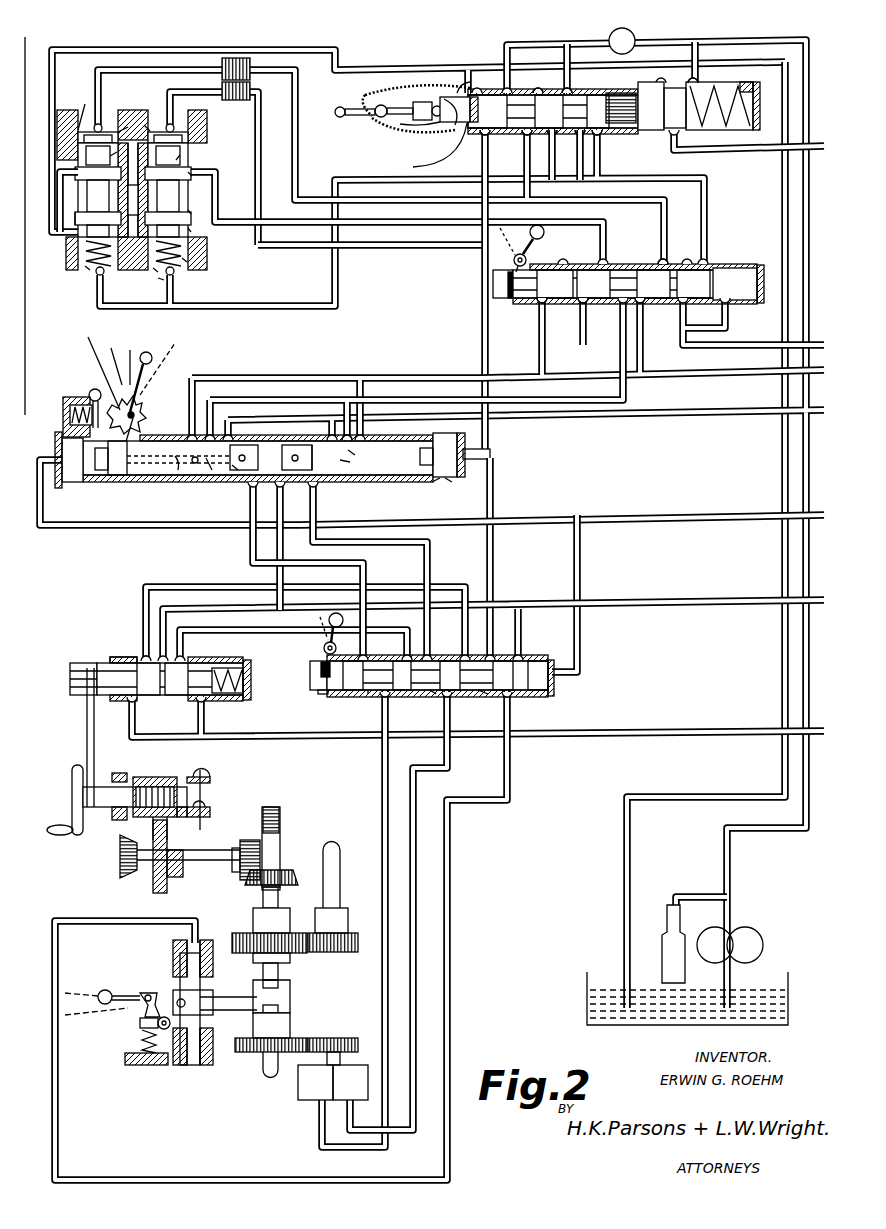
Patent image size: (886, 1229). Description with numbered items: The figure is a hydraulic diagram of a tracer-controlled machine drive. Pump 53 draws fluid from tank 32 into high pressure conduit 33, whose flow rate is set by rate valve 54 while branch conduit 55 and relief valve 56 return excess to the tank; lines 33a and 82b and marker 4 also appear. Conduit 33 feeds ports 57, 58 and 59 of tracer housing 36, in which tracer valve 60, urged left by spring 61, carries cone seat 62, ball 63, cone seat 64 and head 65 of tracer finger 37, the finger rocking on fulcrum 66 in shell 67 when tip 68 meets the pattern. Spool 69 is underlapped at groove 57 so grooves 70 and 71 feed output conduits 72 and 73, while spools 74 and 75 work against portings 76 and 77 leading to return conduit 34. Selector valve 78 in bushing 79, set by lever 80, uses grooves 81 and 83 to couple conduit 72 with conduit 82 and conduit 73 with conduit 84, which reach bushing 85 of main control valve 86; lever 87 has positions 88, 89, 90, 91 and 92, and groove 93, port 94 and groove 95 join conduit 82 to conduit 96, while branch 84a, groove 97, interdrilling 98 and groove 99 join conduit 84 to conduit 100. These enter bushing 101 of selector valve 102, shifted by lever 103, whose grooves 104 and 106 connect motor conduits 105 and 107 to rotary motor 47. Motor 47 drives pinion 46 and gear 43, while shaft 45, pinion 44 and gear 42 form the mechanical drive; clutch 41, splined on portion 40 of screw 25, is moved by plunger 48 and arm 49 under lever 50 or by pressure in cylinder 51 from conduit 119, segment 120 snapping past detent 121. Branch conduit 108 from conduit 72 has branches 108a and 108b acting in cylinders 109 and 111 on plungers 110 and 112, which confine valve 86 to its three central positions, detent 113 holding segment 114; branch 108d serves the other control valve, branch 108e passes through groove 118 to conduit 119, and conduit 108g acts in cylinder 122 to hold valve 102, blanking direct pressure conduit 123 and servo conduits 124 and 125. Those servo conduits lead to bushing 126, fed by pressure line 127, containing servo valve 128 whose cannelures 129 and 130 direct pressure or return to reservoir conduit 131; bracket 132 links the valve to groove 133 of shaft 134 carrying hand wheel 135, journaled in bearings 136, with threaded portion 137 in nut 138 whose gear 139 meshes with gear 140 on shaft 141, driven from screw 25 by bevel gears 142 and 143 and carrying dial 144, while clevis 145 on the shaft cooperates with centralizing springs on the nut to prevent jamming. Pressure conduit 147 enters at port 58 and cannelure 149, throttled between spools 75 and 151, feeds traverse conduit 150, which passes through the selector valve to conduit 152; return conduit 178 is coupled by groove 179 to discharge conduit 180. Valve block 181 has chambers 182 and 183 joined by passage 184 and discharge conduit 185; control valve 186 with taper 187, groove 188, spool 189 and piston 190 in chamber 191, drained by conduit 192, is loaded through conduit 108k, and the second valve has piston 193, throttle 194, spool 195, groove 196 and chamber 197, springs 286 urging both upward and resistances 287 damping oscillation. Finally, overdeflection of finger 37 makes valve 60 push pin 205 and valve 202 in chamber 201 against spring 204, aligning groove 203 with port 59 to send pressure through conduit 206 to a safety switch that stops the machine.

The section line 4 is at (207, 766).
The screw 25 is at (280, 815).
The tank or sump of hydraulic unit 32 is at (597, 1027).
The high pressure conduit 33 is at (783, 227).
The pressure line branch 33a is at (280, 578).
The reservoir return conduit 34 is at (780, 203).
The tracer housing section 36 is at (690, 65).
The tracer finger 37 is at (375, 105).
The extending portion of screw 40 is at (270, 1078).
The double face clutch 41 is at (290, 990).
The gear 42 is at (245, 935).
The gear 43 is at (242, 1055).
The pinion 44 is at (360, 950).
The shaft 45 is at (348, 836).
The pinion 46 is at (358, 1030).
The high pressure rotary pump 47 is at (296, 1100).
The clutch shifting plunger 48 is at (195, 1068).
The shifter arm 49 is at (224, 1012).
The shift lever 50 is at (108, 990).
The hydraulic cylinder 51 is at (172, 954).
The pump 53 is at (740, 928).
The adjustable rate valve 54 is at (608, 33).
The branch conduit 55 is at (688, 897).
The adjustable relief valve 56 is at (665, 925).
The inlet port 57 is at (494, 93).
The inlet port 58 is at (572, 92).
The inlet port 59 is at (700, 84).
The tracer valve member 60 is at (460, 128).
The spring 61 is at (618, 92).
The cone seat 62 is at (452, 124).
The ball 63 is at (436, 117).
The cone seat 64 is at (418, 121).
The head 65 is at (402, 128).
The ball or fulcrum 66 is at (380, 95).
The tracer shell 67 is at (368, 126).
The tracer tip 68 is at (333, 113).
The spool portion 69 is at (487, 134).
The cannelure 70 is at (470, 92).
The cannelure 71 is at (528, 134).
The output conduit 72 is at (483, 172).
The output conduit 73 is at (550, 172).
The spool portion 74 is at (425, 166).
The spool portion 75 is at (553, 134).
The discharge control conduit 76 is at (458, 88).
The discharge control conduit 77 is at (538, 93).
The selector valve 78 is at (728, 262).
The sleeve or bushing 79 is at (722, 265).
The shift lever 80 is at (545, 230).
The groove 81 is at (528, 270).
The conduit 82 is at (534, 306).
The pipe 82b is at (618, 335).
The groove 83 is at (660, 264).
The conduit 84 is at (641, 312).
The branch conduit 84a is at (342, 418).
The sleeve or bushing 85 is at (430, 434).
The main control valve 86 is at (388, 478).
The control lever 87 is at (152, 352).
The position 88 is at (88, 337).
The position 89 is at (112, 345).
The position 90 is at (130, 348).
The position 91 is at (150, 350).
The position 92 is at (176, 345).
The groove 93 is at (180, 478).
The interdrilled port 94 is at (206, 480).
The groove 95 is at (232, 480).
The conduit 96 is at (248, 502).
The valve groove 97 is at (352, 480).
The interdrilling 98 is at (342, 482).
The groove 99 is at (300, 436).
The conduit 100 is at (318, 512).
The valve sleeve or bushing 101 is at (538, 660).
The selector valve 102 is at (330, 695).
The valve shifting lever 103 is at (347, 615).
The groove 104 is at (370, 695).
The motor conduit 105 is at (389, 755).
The valve groove 106 is at (437, 698).
The motor conduit 107 is at (455, 727).
The branch control conduit 108 is at (482, 340).
The branch conduit 108a is at (48, 521).
The branch conduit 108b is at (490, 458).
The branch conduit 108d is at (768, 518).
The branch conduit 108e is at (493, 562).
The conduit 108g is at (582, 564).
The pressure control conduit 108k is at (313, 248).
The cylinder 109 is at (64, 415).
The plunger 110 is at (70, 485).
The cylinder 111 is at (430, 486).
The plunger 112 is at (452, 482).
The spring loaded detent 113 is at (90, 392).
The segment 114 is at (106, 392).
The groove or cannelure 118 is at (482, 694).
The conduit 119 is at (512, 770).
The segment 120 is at (140, 1010).
The detent 121 is at (138, 1038).
The cylinder 122 is at (538, 698).
The direct pressure conduit 123 is at (521, 619).
The servo-control conduit 124 is at (191, 586).
The servo-control conduit 125 is at (283, 635).
The servo-control valve bushing 126 is at (115, 660).
The direct pressure line 127 is at (212, 610).
The servo-control valve 128 is at (188, 660).
The cannelure 129 is at (144, 658).
The cannelure 130 is at (175, 700).
The reservoir conduit 131 is at (270, 738).
The bracket 132 is at (85, 725).
The shifter groove 133 is at (92, 807).
The shaft 134 is at (108, 785).
The hand wheel 135 is at (70, 790).
The anti-friction bearings 136 is at (160, 777).
The threaded portion 137 is at (178, 818).
The nut 138 is at (150, 830).
The external gear portion 139 is at (195, 777).
The gear 140 is at (168, 890).
The shaft 141 is at (217, 868).
The bevel gear 142 is at (250, 838).
The bevel gear 143 is at (284, 872).
The indicating dial 144 is at (120, 880).
The yoke or clevis member 145 is at (210, 782).
The pressure conduit 147 is at (562, 64).
The cannelure 149 is at (580, 134).
The traverse conduit 150 is at (598, 176).
The spool 151 is at (598, 133).
The conduit 152 is at (732, 346).
The conduit 178 is at (708, 373).
The cannelure 179 is at (584, 265).
The reservoir discharge conduit 180 is at (217, 172).
The valve block unit 181 is at (146, 120).
The valve chamber 182 is at (178, 126).
The valve chamber 183 is at (138, 113).
The port or passage 184 is at (112, 185).
The discharge conduit 185 is at (62, 150).
The control valve 186 is at (182, 152).
The taper portion 187 is at (192, 175).
The groove 188 is at (190, 215).
The blocking spool 189 is at (190, 232).
The piston portion 190 is at (188, 262).
The chamber 191 is at (158, 280).
The drain conduit 192 is at (88, 104).
The upper piston portion 193 is at (122, 150).
The intermediate throttle portion 194 is at (80, 185).
The blocking spool portion 195 is at (88, 214).
The groove 196 is at (118, 200).
The pressure chamber 197 is at (85, 268).
The auxiliary valve chamber 201 is at (740, 84).
The valve 202 is at (730, 132).
The central groove 203 is at (672, 133).
The heavy spring 204 is at (755, 132).
The pin or abutment 205 is at (648, 93).
The conduit 206 is at (714, 153).
The springs 286 is at (155, 270).
The resistances 287 is at (220, 92).